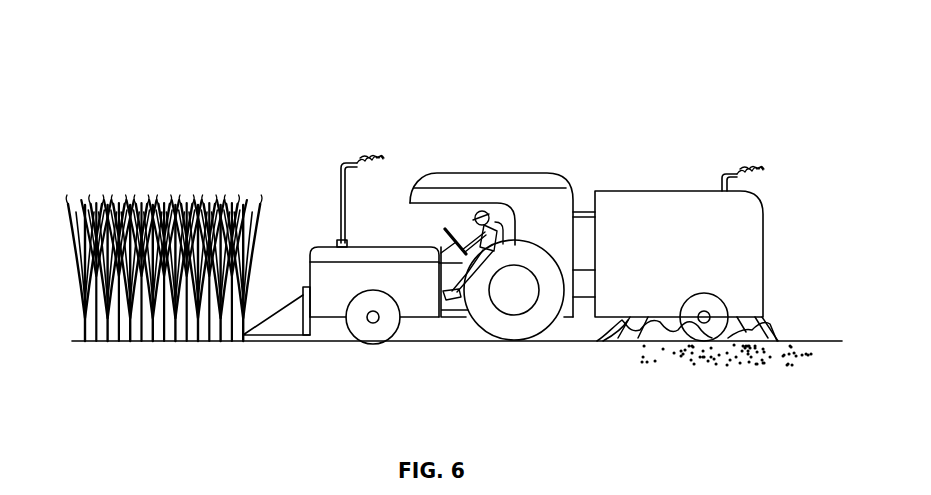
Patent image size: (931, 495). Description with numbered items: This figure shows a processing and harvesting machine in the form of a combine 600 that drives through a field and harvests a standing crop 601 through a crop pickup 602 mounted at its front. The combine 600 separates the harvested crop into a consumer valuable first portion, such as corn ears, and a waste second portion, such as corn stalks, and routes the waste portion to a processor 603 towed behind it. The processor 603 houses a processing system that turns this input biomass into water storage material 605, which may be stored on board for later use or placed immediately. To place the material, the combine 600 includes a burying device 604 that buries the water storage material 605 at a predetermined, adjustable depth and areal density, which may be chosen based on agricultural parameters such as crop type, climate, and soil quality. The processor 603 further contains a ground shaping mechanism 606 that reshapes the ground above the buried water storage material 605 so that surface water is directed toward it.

The combine 600 is at (326, 181).
The crop 601 is at (121, 200).
The crop pickup 602 is at (283, 328).
The processor 603 is at (660, 200).
The burying device 604 is at (630, 328).
The water storage material 605 is at (821, 365).
The ground shaping mechanism 606 is at (763, 327).